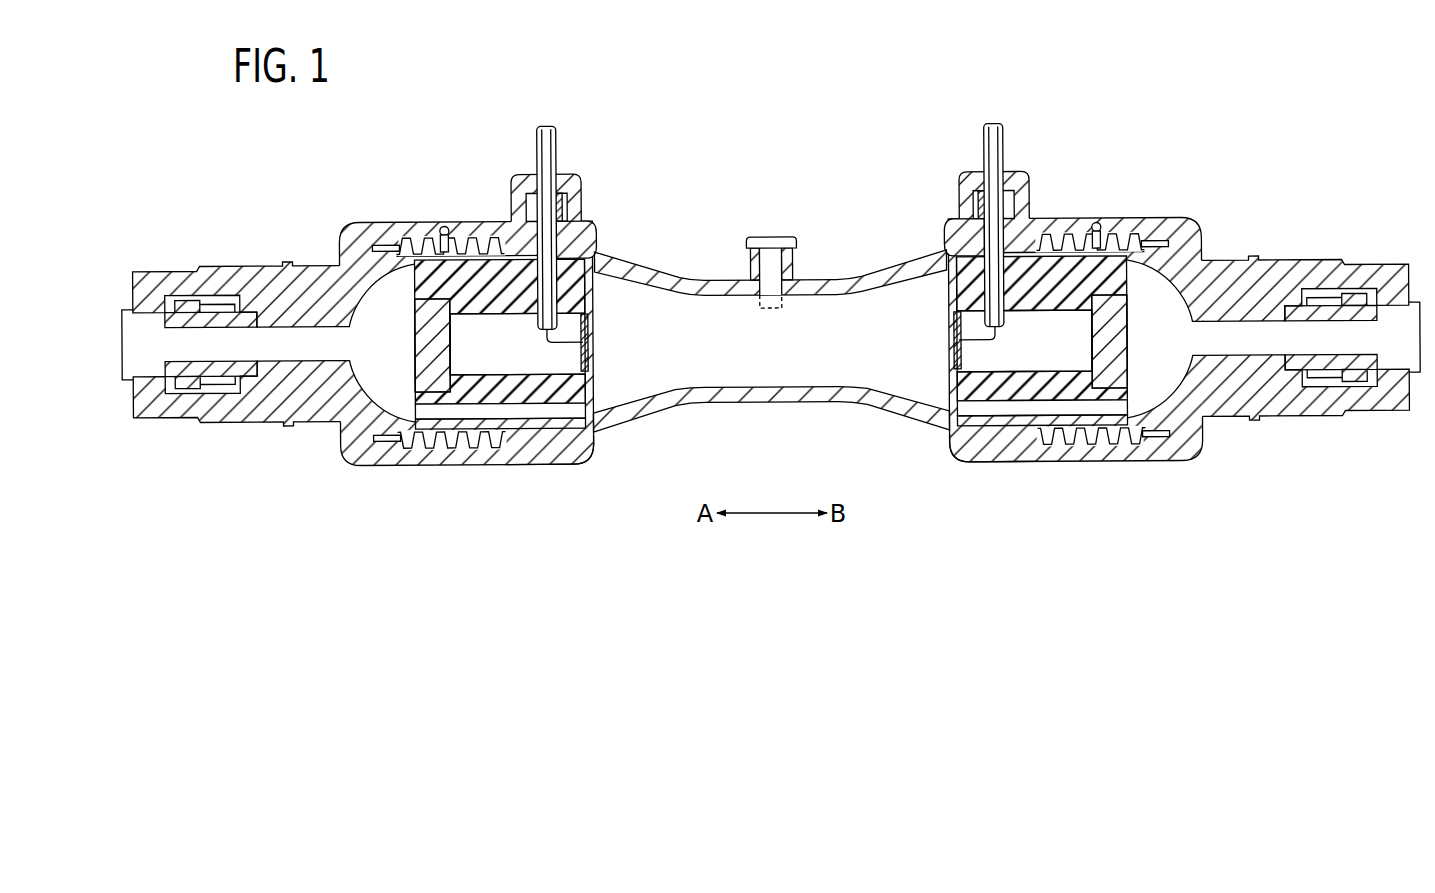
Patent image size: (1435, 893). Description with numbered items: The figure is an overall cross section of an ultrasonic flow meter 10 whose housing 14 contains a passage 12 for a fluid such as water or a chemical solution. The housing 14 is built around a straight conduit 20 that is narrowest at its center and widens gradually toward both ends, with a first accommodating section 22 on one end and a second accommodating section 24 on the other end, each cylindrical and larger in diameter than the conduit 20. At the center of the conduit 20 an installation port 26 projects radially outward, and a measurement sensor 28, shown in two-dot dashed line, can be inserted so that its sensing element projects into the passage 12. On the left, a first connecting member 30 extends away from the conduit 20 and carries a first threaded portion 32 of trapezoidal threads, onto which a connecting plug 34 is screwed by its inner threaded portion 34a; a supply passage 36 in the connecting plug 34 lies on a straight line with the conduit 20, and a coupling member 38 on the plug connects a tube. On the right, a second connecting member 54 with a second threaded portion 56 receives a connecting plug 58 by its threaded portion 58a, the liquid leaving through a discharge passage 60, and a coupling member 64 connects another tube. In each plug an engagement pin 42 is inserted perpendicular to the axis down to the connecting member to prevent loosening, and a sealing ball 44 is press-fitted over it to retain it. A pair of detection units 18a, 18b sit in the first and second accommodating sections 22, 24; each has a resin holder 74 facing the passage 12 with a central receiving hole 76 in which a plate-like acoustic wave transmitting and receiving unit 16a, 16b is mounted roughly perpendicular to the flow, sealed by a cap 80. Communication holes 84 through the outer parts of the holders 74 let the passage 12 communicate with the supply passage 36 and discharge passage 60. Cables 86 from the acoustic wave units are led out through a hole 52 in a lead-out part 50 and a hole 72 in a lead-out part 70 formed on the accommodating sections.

The ultrasonic flow meter 10 is at (1167, 104).
The passage 12 is at (771, 347).
The housing 14 is at (657, 419).
The acoustic wave transmitting and receiving unit 16a is at (595, 331).
The acoustic wave transmitting and receiving unit 16b is at (947, 329).
The detection unit 18a is at (609, 349).
The detection unit 18b is at (933, 349).
The conduit 20 is at (840, 275).
The first accommodating section 22 is at (517, 468).
The second accommodating section 24 is at (1027, 464).
The installation port 26 is at (764, 286).
The measurement sensor 28 is at (774, 235).
The first connecting member 30 is at (420, 434).
The first threaded portion 32 is at (463, 236).
The connecting plug 34 is at (343, 458).
The threaded portion 34a is at (445, 450).
The supply passage 36 is at (253, 352).
The coupling member 38 is at (167, 274).
The engagement pin 42 is at (437, 226).
The sealing ball 44 is at (444, 224).
The lead-out part 50 is at (568, 198).
The hole 52 is at (584, 236).
The second connecting member 54 is at (1142, 435).
The second threaded portion 56 is at (1061, 234).
The connecting plug 58 is at (1206, 455).
The threaded portion 58a is at (1100, 444).
The discharge passage 60 is at (1291, 348).
The coupling member 64 is at (1373, 270).
The lead-out part 70 is at (973, 196).
The hole 72 is at (960, 230).
The holder 74 is at (561, 394).
The receiving hole 76 is at (462, 352).
The cap 80 is at (414, 323).
The communication hole 84 is at (475, 412).
The cable 86 is at (538, 146).